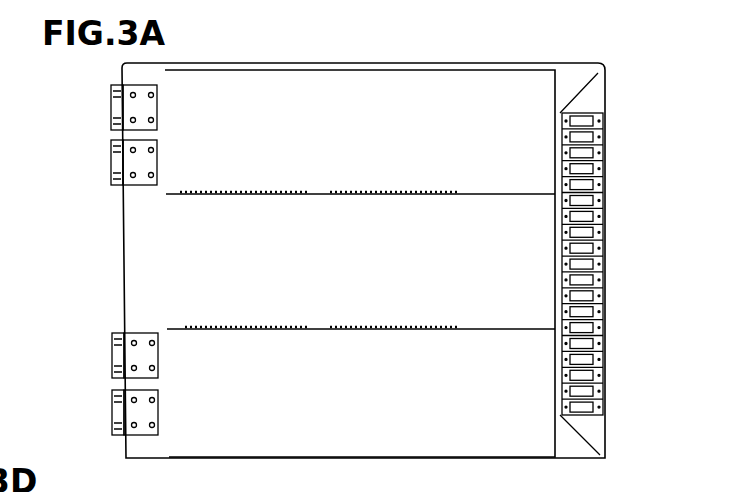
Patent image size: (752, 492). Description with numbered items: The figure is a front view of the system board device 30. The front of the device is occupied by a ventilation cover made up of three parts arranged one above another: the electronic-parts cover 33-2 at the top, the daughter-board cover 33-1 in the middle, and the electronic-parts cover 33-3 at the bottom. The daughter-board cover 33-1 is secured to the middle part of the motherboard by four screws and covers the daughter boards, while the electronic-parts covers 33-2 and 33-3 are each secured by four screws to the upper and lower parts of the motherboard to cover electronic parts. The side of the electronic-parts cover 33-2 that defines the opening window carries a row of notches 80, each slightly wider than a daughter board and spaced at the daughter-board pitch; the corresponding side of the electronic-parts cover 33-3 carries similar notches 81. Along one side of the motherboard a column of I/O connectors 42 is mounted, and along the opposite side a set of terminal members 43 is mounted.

The system board device 30 is at (515, 49).
The daughter-board cover 33-1 is at (452, 267).
The electronic-parts cover 33-2 is at (452, 150).
The electronic-parts cover 33-3 is at (456, 400).
The notches 80 is at (304, 195).
The notches 81 is at (309, 328).
The I/O connectors 42 is at (604, 182).
The terminal members 43 is at (110, 110).